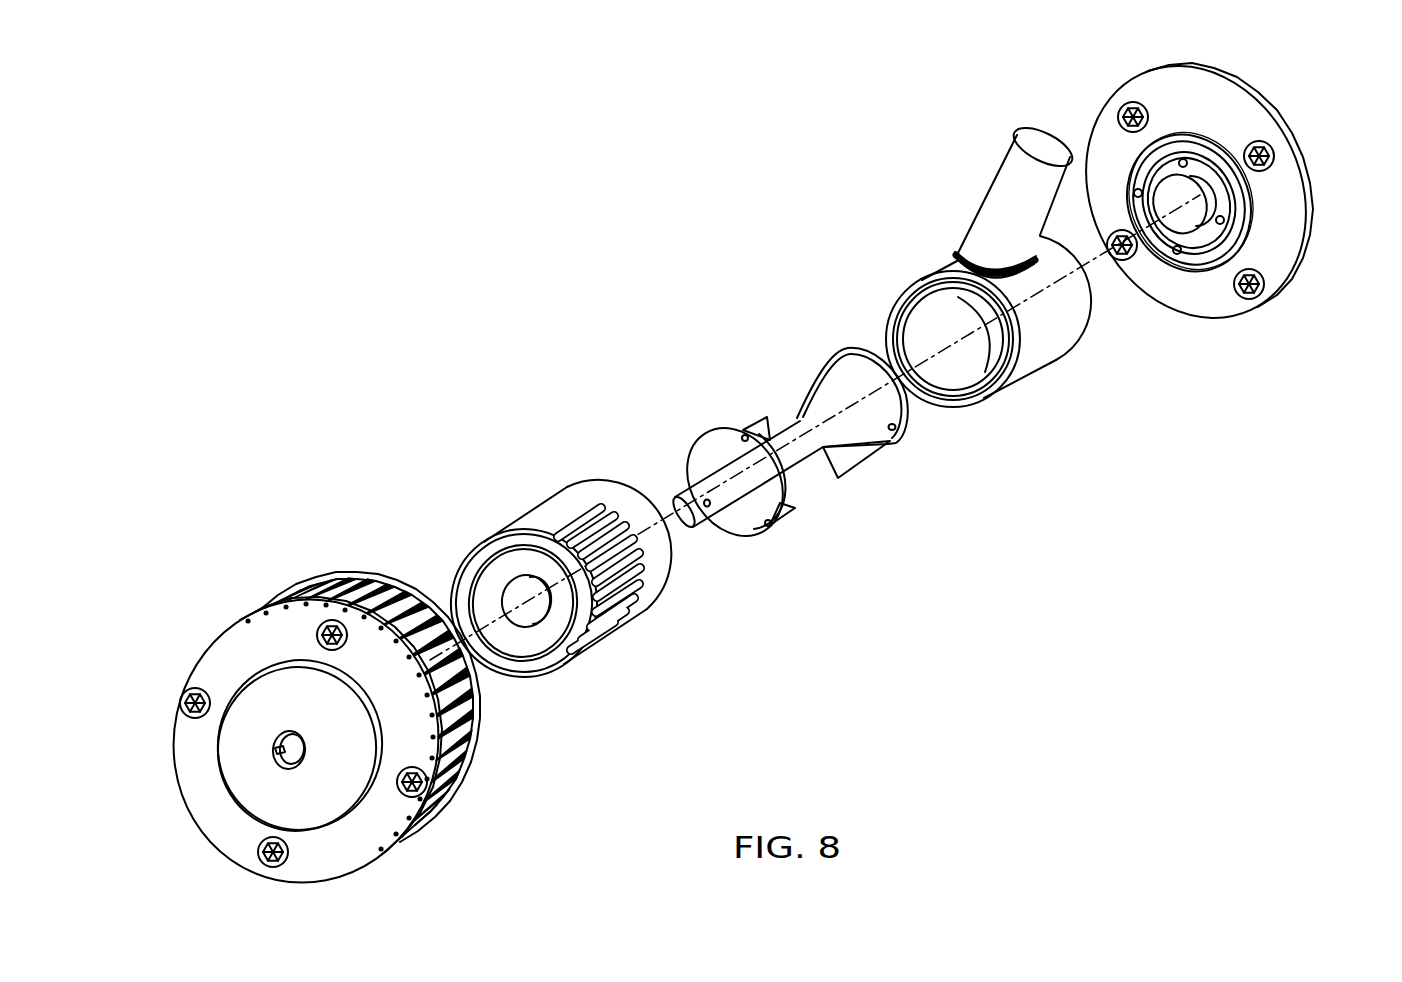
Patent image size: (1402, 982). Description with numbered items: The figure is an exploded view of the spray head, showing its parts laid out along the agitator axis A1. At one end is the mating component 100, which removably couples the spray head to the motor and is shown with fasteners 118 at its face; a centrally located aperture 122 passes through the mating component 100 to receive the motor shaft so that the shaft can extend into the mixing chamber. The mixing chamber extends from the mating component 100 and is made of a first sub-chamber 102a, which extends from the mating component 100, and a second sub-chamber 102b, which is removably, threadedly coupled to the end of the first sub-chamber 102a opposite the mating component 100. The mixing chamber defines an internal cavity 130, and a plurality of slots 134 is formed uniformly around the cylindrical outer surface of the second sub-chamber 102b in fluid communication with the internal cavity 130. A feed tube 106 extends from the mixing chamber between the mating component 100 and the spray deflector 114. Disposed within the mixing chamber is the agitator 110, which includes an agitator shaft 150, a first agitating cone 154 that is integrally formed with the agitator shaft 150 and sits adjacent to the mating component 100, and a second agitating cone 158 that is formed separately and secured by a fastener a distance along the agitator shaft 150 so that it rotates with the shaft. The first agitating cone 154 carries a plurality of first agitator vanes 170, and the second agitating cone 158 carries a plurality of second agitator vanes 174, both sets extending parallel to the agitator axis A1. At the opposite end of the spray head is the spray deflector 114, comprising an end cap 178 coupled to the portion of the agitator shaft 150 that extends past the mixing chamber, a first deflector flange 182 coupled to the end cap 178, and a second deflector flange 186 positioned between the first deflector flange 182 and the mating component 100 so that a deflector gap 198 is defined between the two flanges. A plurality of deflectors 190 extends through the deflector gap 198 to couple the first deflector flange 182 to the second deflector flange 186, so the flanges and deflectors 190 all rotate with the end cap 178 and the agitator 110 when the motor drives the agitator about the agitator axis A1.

The mating component 100 is at (1204, 197).
The fasteners 118 is at (1125, 114).
The aperture 122 is at (1232, 235).
The feed tube 106 is at (997, 205).
The internal cavity 130 is at (532, 632).
The first sub-chamber 102a is at (988, 273).
The second sub-chamber 102b is at (571, 551).
The slots 134 is at (545, 498).
The agitator shaft 150 is at (790, 415).
The first agitating cone 154 is at (858, 393).
The second agitating cone 158 is at (743, 472).
The first agitator vanes 170 is at (852, 460).
The second agitator vanes 174 is at (742, 430).
The agitator axis A1 is at (900, 413).
The agitator 110 is at (915, 540).
The spray deflector 114 is at (326, 694).
The end cap 178 is at (240, 628).
The first deflector flange 182 is at (480, 740).
The second deflector flange 186 is at (396, 668).
The deflectors 190 is at (345, 580).
The deflector gap 198 is at (375, 568).